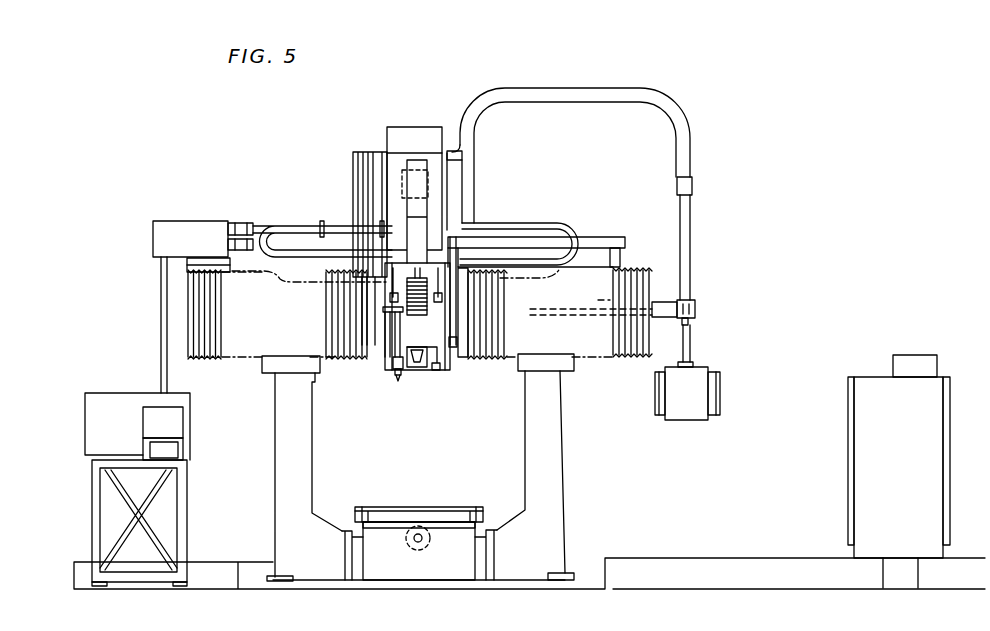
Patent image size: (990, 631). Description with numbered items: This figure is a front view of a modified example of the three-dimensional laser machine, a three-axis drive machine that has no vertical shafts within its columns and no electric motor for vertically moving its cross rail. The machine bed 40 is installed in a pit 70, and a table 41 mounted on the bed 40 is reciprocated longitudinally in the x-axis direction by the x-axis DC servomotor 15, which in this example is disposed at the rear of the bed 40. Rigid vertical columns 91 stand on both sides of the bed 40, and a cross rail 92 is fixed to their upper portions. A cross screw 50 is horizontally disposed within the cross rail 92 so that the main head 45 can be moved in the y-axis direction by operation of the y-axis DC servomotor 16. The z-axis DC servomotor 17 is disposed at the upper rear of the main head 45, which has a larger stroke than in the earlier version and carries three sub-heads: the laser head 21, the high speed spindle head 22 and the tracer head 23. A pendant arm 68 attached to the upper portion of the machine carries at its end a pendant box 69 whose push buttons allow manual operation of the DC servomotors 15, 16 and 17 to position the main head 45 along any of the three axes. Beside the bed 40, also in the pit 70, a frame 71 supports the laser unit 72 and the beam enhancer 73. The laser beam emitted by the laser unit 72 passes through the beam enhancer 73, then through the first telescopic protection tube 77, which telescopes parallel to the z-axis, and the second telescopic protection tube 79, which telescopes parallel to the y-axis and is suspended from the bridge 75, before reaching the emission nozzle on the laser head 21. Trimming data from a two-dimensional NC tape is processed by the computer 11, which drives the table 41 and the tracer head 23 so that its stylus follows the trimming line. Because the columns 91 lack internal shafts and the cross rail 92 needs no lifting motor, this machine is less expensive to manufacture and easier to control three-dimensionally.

The computer 11 is at (908, 362).
The x-axis DC servomotor 15 is at (414, 552).
The y-axis DC servomotor 16 is at (697, 306).
The z-axis DC servomotor 17 is at (385, 190).
The laser head 21 is at (395, 382).
The high speed spindle head 22 is at (420, 370).
The tracer head 23 is at (438, 375).
The bed 40 is at (462, 566).
The table 41 is at (452, 507).
The main head 45 is at (440, 197).
The cross screw 50 is at (575, 309).
The pendant arm 68 is at (668, 98).
The pendant box 69 is at (697, 412).
The pit 70 is at (588, 580).
The frame 71 is at (95, 505).
The laser unit 72 is at (100, 437).
The beam enhancer 73 is at (157, 410).
The bridge 75 is at (590, 237).
The first telescopic protection tube 77 is at (163, 325).
The second telescopic protection tube 79 is at (268, 225).
The rigid vertical column 91 is at (274, 498).
The cross rail 92 is at (598, 345).